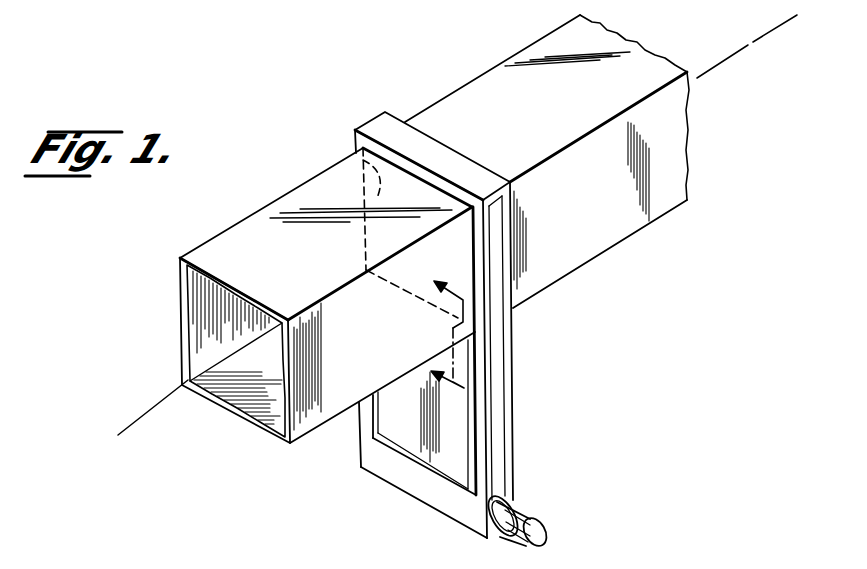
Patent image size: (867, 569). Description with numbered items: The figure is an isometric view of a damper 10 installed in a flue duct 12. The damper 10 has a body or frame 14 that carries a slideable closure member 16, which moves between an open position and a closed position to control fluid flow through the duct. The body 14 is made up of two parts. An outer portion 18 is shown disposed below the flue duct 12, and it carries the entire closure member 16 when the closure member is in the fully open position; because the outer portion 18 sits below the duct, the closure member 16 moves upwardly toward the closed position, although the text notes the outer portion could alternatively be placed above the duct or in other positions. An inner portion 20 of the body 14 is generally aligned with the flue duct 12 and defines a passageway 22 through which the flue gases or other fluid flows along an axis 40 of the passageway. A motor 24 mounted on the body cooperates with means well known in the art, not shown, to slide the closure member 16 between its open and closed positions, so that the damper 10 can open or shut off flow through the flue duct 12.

The damper 10 is at (357, 428).
The flue duct 12 is at (587, 245).
The body or frame 14 is at (467, 340).
The slideable closure member 16 is at (417, 422).
The outer portion 18 is at (480, 425).
The inner portion 20 is at (497, 231).
The passageway 22 is at (350, 150).
The motor 24 is at (520, 512).
The axis 40 is at (133, 425).